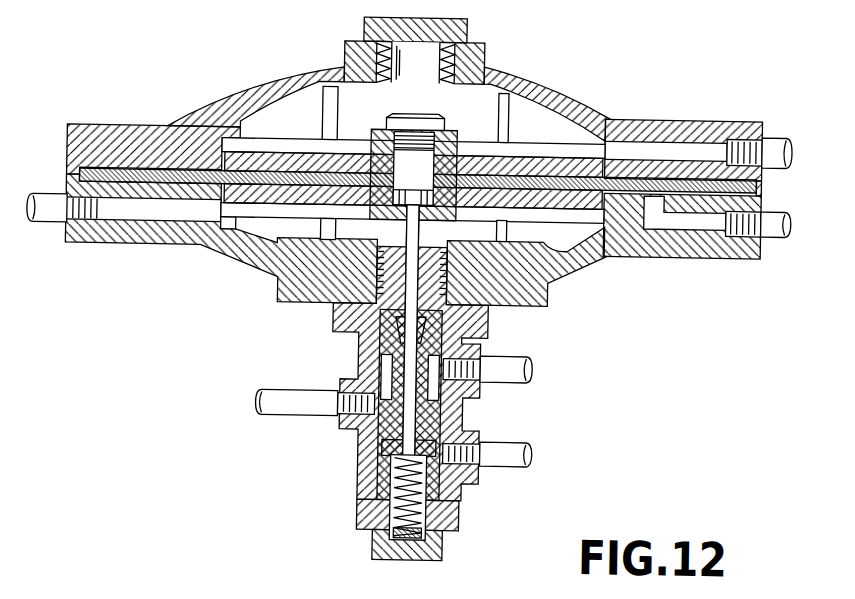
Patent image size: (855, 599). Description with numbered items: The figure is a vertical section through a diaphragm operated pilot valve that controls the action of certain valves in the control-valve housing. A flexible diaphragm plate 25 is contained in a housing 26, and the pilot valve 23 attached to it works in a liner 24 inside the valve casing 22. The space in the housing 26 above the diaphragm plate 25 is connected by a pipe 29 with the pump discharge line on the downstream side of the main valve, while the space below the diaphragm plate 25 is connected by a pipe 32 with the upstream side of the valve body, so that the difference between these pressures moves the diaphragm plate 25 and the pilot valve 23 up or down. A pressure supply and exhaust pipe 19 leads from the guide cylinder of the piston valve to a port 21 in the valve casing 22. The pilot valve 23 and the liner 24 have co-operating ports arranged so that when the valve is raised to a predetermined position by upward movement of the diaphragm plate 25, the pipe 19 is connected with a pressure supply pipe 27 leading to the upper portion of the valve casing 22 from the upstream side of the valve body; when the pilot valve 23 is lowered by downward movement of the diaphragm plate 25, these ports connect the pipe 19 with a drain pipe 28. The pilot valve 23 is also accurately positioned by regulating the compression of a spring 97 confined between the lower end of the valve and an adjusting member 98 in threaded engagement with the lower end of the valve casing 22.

The pressure supply and exhaust pipe 19 is at (296, 392).
The port 21 is at (377, 398).
The valve casing 22 is at (364, 466).
The pilot valve 23 is at (363, 438).
The liner 24 is at (376, 333).
The flexible diaphragm plate 25 is at (543, 178).
The housing 26 is at (616, 114).
The pressure supply pipe 27 is at (517, 365).
The drain pipe 28 is at (513, 450).
The pipe 29 is at (778, 134).
The pipe 32 is at (48, 230).
The spring 97 is at (368, 506).
The adjusting member 98 is at (382, 556).